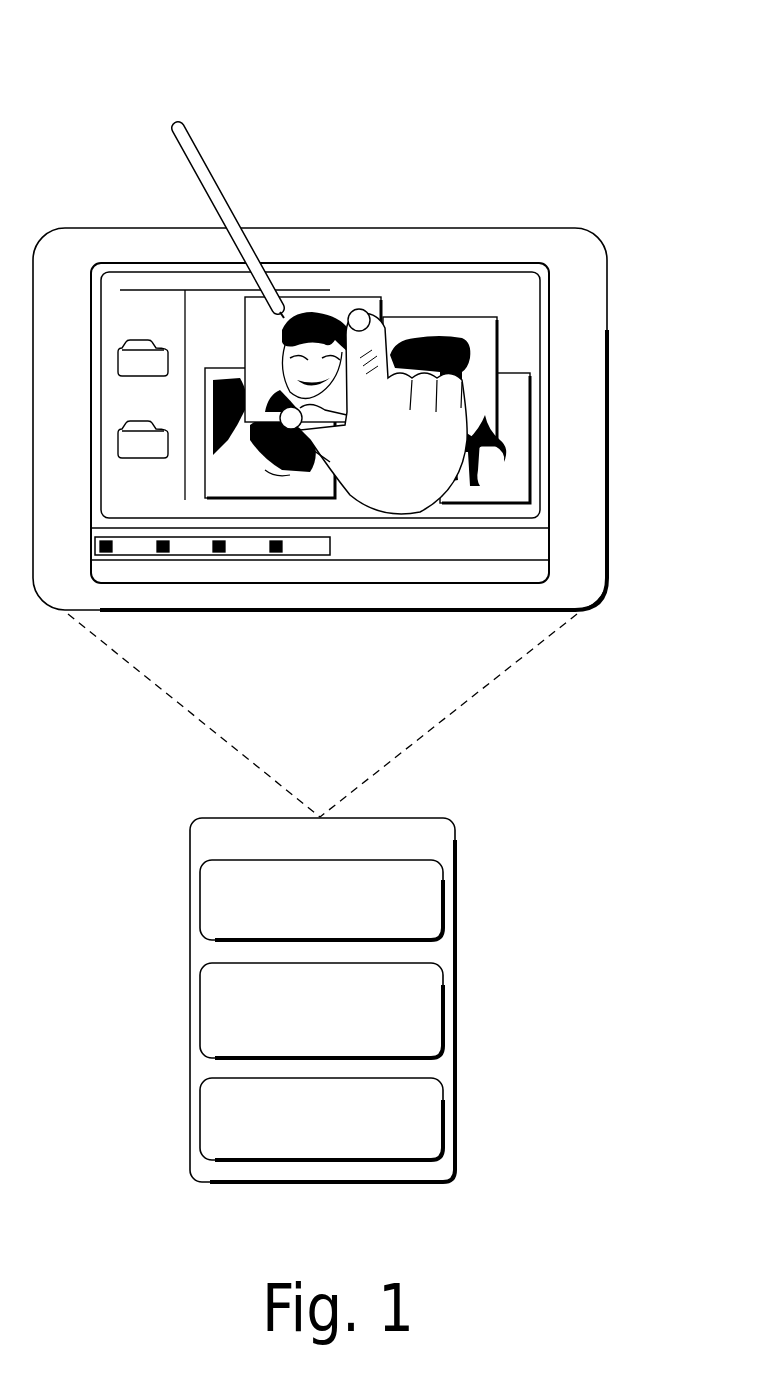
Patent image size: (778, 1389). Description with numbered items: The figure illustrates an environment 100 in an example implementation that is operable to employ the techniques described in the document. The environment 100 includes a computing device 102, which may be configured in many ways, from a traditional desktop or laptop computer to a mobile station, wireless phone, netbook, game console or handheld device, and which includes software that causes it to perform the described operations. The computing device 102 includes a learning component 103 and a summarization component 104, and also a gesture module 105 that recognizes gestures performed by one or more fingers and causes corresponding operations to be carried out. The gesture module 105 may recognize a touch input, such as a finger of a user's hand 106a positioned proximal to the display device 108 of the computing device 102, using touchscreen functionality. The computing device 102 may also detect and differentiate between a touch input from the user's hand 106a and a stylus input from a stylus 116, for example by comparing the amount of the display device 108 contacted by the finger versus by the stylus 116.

The environment 100 is at (613, 110).
The computing device 102 is at (322, 1000).
The learning component 103 is at (321, 900).
The summarization component 104 is at (321, 1010).
The gesture module 105 is at (321, 1119).
The user's hand 106a is at (430, 497).
The display device 108 is at (524, 291).
The stylus 116 is at (177, 113).